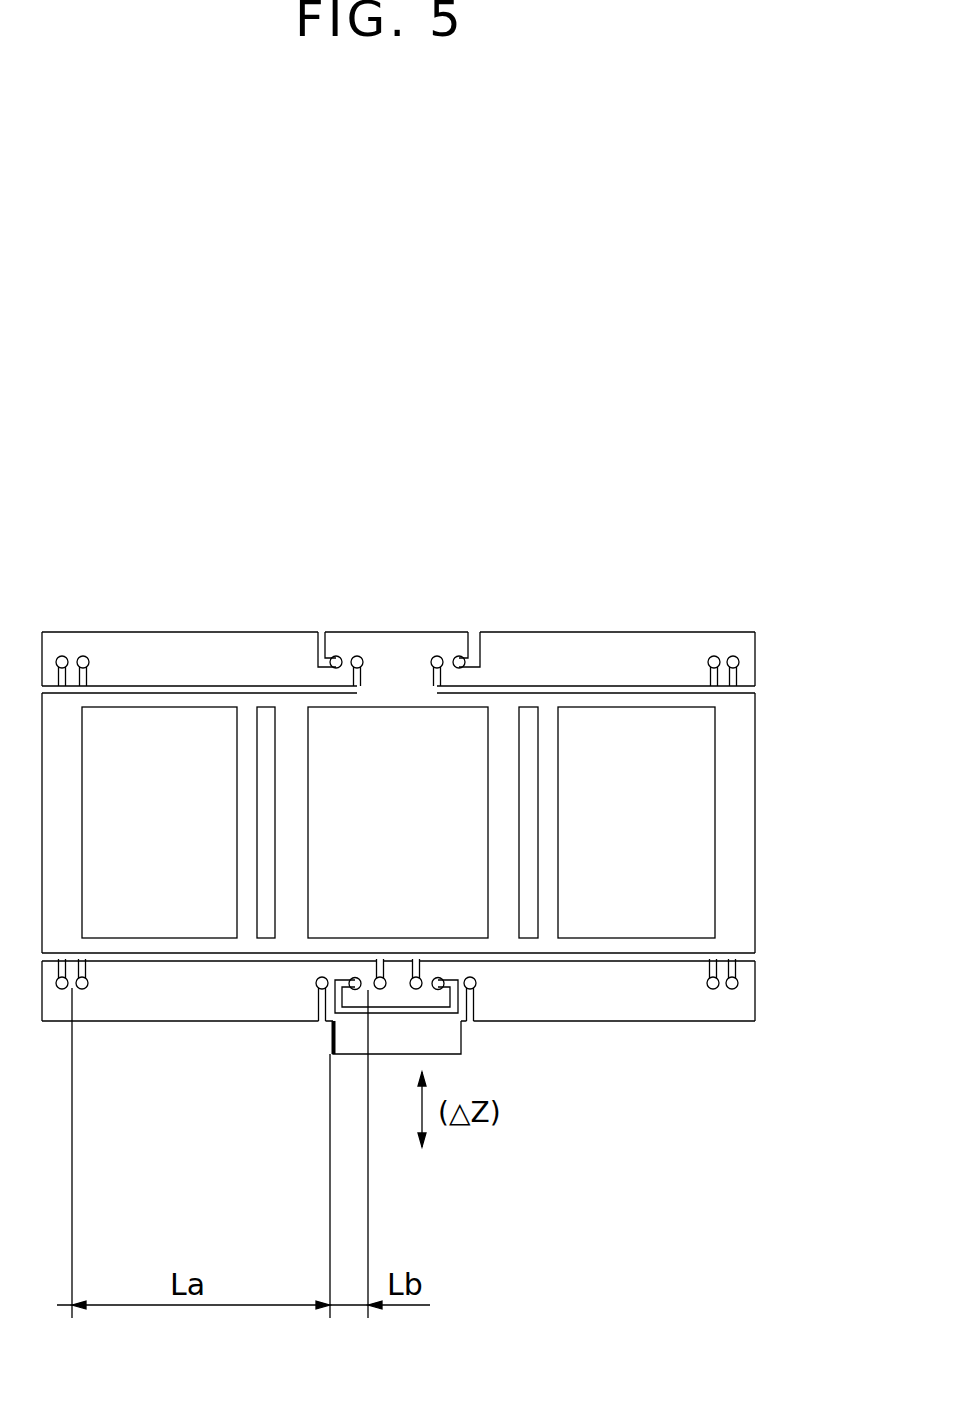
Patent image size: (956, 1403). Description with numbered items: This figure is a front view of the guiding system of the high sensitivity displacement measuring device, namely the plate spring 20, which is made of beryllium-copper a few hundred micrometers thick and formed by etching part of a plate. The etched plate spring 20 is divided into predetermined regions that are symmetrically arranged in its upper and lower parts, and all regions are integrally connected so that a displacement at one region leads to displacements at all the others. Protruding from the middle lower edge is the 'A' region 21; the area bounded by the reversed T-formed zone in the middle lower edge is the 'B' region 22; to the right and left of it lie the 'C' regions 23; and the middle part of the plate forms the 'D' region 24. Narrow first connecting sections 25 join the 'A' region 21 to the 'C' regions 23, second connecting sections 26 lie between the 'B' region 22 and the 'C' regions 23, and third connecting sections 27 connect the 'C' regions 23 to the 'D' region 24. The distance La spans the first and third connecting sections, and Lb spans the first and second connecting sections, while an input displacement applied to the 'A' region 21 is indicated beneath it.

The plate spring 20 is at (660, 530).
The 'A' region 21 is at (410, 1043).
The 'B' region 22 is at (400, 1003).
The 'C' region 23 is at (630, 997).
The 'D' region 24 is at (737, 818).
The first connecting section 25 is at (331, 1003).
The second connecting section 26 is at (379, 975).
The third connecting section 27 is at (72, 963).